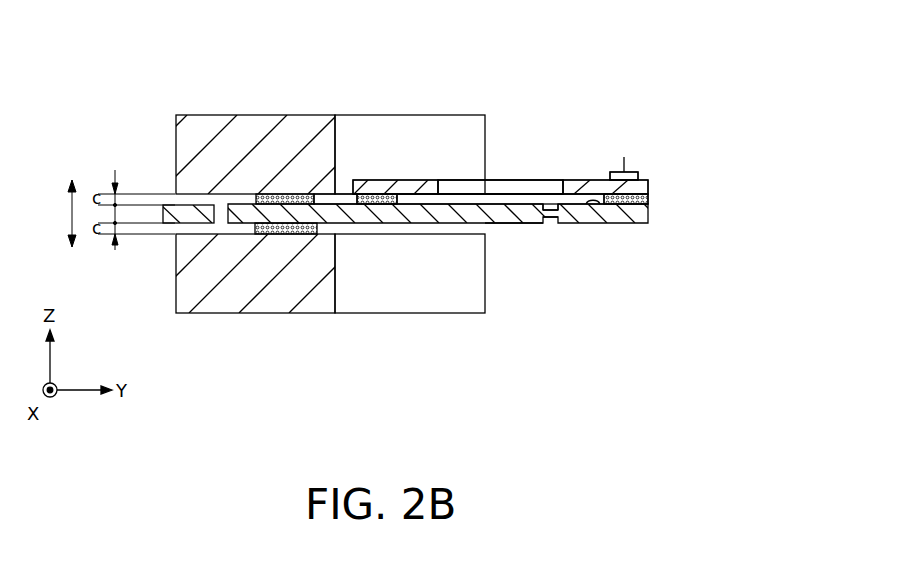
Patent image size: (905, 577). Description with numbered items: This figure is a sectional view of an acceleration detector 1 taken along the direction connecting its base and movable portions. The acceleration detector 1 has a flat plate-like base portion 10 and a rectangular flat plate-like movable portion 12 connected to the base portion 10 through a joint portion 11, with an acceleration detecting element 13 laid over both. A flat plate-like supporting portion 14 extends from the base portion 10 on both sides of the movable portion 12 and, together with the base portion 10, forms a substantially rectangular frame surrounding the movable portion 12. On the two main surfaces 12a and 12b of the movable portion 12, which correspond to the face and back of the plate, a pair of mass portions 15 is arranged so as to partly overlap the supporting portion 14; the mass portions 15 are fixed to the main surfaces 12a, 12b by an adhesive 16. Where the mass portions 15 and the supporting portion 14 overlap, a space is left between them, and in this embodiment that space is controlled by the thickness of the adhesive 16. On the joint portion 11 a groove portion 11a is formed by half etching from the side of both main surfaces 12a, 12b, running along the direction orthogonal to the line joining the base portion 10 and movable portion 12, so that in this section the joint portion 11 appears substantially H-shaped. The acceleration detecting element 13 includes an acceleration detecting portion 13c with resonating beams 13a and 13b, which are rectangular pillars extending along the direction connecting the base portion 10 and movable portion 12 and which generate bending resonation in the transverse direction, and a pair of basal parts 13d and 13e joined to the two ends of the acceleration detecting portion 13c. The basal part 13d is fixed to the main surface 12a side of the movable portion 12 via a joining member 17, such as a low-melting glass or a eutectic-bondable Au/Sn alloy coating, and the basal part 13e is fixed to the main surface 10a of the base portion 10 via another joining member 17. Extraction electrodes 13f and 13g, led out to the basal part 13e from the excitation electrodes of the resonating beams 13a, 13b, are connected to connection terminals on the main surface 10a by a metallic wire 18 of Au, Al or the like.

The acceleration detector 1 is at (622, 90).
The base portion 10 is at (650, 214).
The main surface of base portion 10a is at (593, 204).
The joint portion 11 is at (549, 219).
The groove portion 11a is at (555, 190).
The movable portion 12 is at (453, 217).
The main surface of movable portion 12a is at (515, 195).
The main surface of movable portion 12b is at (512, 223).
The acceleration detecting element 13 is at (589, 165).
The resonating beam 13a is at (468, 184).
The resonating beam 13b is at (500, 187).
The acceleration detecting portion 13c is at (535, 165).
The basal part 13d is at (410, 184).
The basal part 13e is at (652, 193).
The extraction electrode 13f is at (640, 174).
The extraction electrode 13g is at (624, 176).
The supporting portion 14 is at (163, 213).
The mass portion 15 is at (228, 114).
The adhesive 16 is at (289, 198).
The joining member 17 is at (366, 197).
The metallic wire 18 is at (624, 157).